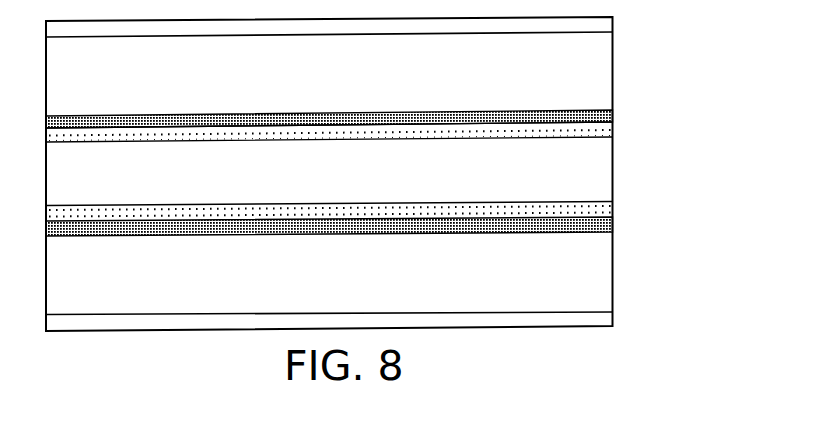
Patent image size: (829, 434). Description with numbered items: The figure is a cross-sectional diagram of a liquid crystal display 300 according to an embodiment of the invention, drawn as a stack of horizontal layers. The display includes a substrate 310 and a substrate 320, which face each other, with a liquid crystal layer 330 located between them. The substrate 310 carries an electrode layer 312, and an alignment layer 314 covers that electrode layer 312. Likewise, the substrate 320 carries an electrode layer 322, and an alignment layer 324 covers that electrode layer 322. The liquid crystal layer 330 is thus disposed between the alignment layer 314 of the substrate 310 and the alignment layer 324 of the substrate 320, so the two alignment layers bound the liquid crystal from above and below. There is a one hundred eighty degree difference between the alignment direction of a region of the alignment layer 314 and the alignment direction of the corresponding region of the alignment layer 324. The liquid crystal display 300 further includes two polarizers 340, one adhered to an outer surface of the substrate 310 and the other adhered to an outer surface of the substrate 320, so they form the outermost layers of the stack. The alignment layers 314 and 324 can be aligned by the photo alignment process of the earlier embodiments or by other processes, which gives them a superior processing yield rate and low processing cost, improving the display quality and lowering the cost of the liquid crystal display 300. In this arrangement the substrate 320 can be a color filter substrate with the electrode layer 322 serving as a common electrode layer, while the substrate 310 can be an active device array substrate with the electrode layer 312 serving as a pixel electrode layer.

The liquid crystal display 300 is at (700, 371).
The substrate 310 is at (597, 66).
The electrode layer 312 is at (594, 116).
The alignment layer 314 is at (597, 131).
The substrate 320 is at (597, 267).
The electrode layer 322 is at (610, 225).
The alignment layer 324 is at (603, 208).
The liquid crystal layer 330 is at (597, 181).
The polarizers 340 is at (597, 24).